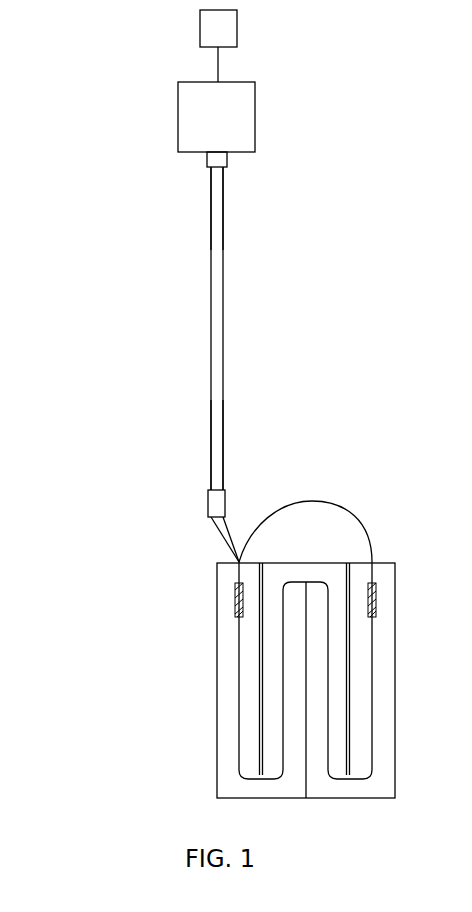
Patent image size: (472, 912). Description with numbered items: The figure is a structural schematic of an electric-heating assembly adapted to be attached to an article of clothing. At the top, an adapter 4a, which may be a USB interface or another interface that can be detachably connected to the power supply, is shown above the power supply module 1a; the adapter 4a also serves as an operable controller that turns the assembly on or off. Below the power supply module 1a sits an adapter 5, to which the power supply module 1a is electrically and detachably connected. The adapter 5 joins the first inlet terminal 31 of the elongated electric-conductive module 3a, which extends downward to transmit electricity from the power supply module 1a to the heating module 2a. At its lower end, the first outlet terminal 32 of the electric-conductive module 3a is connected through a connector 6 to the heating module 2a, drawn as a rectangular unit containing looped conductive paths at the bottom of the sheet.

The adapter 4a is at (200, 21).
The power supply module 1a is at (178, 128).
The adapter 5 is at (215, 161).
The first inlet terminal 31 is at (223, 183).
The electric-conductive module 3a is at (209, 330).
The first outlet terminal 32 is at (225, 478).
The connector 6 is at (208, 506).
The heating module 2a is at (208, 645).